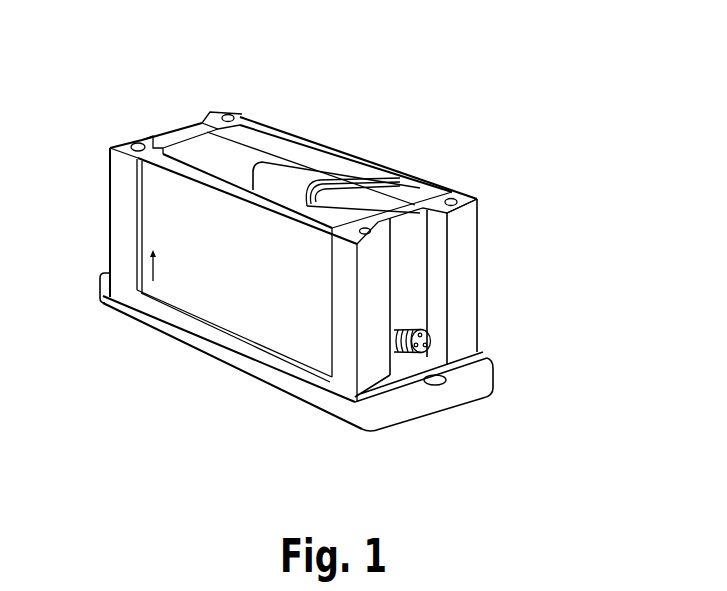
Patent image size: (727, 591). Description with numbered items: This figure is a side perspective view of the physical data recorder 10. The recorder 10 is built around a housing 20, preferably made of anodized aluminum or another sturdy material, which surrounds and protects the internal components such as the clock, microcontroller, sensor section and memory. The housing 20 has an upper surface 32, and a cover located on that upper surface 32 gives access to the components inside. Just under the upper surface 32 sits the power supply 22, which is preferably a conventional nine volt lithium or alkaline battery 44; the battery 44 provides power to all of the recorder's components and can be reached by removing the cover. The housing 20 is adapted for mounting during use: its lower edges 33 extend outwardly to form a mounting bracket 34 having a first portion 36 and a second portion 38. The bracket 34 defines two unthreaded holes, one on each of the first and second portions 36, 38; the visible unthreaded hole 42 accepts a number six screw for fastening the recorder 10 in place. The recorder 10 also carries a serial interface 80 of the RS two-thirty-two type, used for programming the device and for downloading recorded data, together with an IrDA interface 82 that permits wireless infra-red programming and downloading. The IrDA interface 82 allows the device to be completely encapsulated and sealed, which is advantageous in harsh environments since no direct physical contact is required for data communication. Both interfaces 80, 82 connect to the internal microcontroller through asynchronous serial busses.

The recorder 10 is at (152, 96).
The housing 20 is at (124, 192).
The power supply 22 is at (287, 154).
The upper surface 32 is at (462, 196).
The lower edges 33 is at (478, 355).
The mounting bracket 34 is at (383, 398).
The first portion 36 is at (103, 273).
The second portion 38 is at (468, 371).
The unthreaded hole 42 is at (438, 381).
The battery 44 is at (252, 145).
The RS-232 interface 80 is at (422, 338).
The IrDA interface 82 is at (253, 303).